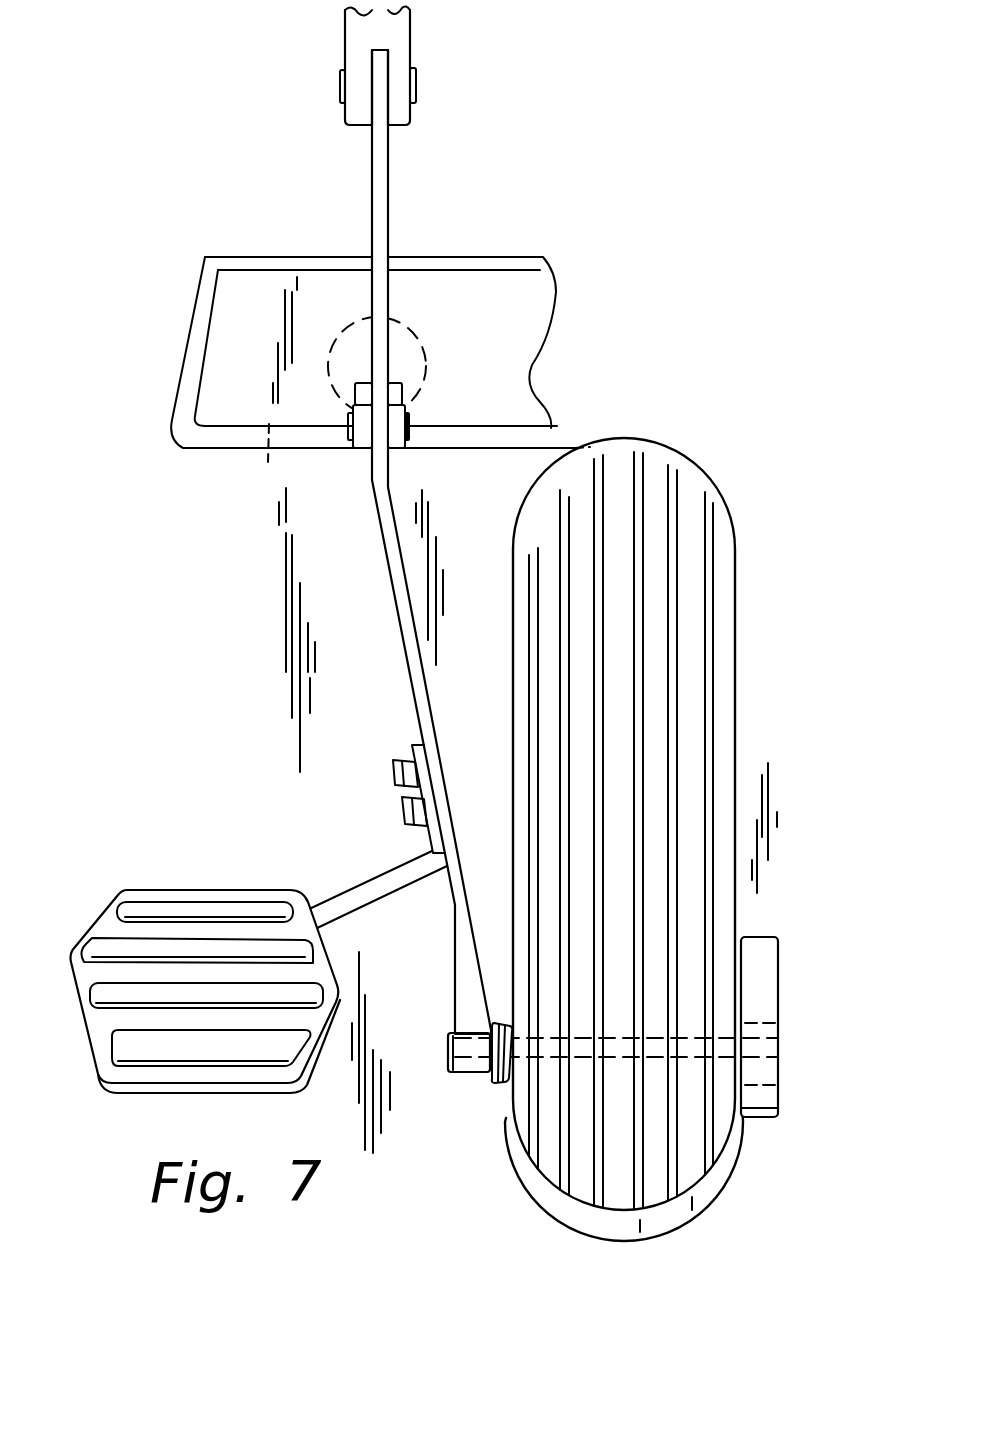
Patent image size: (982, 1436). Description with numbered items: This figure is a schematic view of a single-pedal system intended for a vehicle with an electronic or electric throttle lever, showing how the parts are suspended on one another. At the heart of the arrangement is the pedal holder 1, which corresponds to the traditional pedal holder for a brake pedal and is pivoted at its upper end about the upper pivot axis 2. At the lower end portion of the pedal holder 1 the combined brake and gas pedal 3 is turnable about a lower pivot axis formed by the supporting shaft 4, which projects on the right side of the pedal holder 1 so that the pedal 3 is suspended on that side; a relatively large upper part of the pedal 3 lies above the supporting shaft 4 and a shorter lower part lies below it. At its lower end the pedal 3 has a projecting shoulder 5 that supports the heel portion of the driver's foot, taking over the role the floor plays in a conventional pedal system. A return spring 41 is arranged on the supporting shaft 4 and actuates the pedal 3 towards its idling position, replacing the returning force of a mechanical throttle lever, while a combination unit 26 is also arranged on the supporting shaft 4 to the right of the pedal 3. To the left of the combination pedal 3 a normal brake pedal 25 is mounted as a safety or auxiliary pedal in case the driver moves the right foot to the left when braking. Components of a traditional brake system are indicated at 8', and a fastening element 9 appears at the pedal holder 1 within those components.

The pedal holder 1 is at (447, 798).
The upper pivot axis 2 is at (411, 89).
The combined brake and gas pedal 3 is at (723, 717).
The supporting shaft 4 is at (778, 1040).
The projecting shoulder 5 is at (625, 1222).
The components of a traditional brake system 8' is at (380, 329).
The pivot bolt 9 is at (410, 427).
The brake pedal 25 is at (207, 902).
The combination unit 26 is at (762, 935).
The return spring 41 is at (493, 1078).